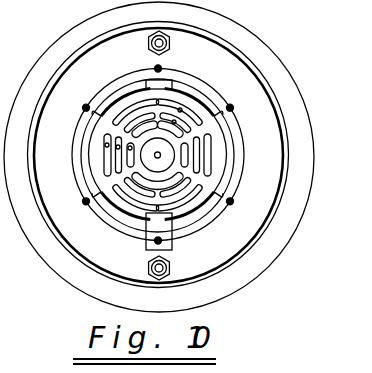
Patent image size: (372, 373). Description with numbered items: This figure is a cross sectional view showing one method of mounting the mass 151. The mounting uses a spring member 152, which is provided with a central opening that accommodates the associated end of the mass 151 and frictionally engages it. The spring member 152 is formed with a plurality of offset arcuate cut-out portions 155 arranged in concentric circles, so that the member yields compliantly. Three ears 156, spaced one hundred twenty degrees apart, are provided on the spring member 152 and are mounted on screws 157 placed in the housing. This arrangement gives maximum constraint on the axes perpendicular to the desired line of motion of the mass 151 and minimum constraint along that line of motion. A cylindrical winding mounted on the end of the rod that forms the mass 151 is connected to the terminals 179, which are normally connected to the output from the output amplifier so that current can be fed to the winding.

The mass 151 is at (160, 155).
The spring member 152 is at (202, 238).
The offset arcuate cut-out portions 155 is at (130, 148).
The ears 156 is at (95, 119).
The screws 157 is at (158, 68).
The terminals 179 is at (159, 157).